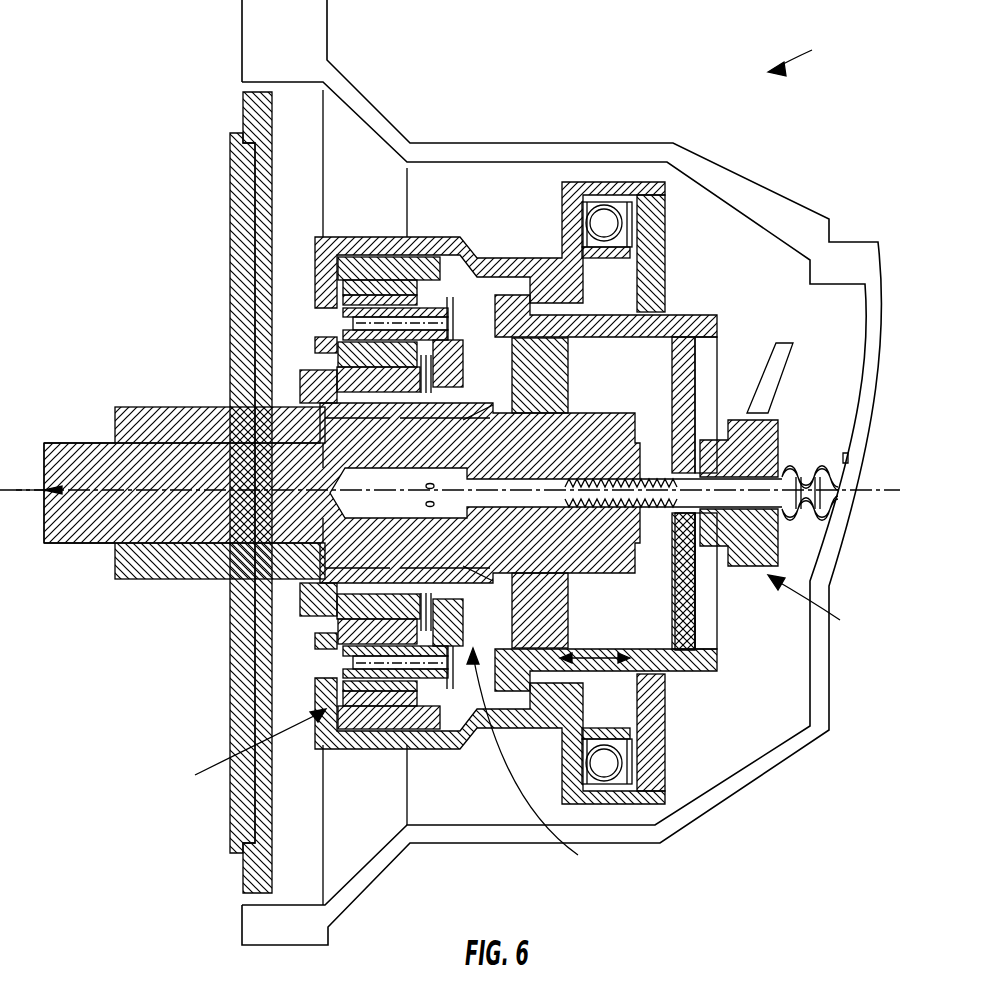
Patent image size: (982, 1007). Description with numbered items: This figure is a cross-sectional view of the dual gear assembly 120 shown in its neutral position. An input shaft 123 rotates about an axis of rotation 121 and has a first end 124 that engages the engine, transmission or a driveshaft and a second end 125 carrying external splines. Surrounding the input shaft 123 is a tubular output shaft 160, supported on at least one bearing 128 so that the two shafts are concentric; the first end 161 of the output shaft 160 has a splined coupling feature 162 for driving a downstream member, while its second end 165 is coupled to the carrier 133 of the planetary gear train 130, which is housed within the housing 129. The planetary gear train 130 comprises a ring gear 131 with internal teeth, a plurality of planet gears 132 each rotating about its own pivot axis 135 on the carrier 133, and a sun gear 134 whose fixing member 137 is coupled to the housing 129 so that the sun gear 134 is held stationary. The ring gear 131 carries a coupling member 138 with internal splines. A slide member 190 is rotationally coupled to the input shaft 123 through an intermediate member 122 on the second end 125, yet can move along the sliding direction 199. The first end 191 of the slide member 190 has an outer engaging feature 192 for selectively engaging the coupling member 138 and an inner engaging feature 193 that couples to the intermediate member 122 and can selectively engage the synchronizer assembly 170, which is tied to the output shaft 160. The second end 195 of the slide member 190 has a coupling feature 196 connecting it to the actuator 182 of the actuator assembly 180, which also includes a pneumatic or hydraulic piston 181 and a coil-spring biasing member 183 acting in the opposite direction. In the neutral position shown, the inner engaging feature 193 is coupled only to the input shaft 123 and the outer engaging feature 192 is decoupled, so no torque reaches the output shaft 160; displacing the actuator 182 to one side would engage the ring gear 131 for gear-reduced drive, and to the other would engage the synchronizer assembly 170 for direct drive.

The dual gear assembly 120 is at (809, 53).
The axis of rotation 121 is at (16, 488).
The intermediate member 122 is at (520, 634).
The input shaft 123 is at (211, 484).
The first end 124 is at (61, 484).
The second end 125 is at (536, 451).
The bearing 128 is at (327, 566).
The housing 129 is at (266, 56).
The planetary gear train 130 is at (238, 752).
The ring gear 131 is at (400, 262).
The planet gears 132 is at (330, 290).
The carrier 133 is at (330, 278).
The sun gear 134 is at (353, 382).
The pivot axis 135 is at (330, 688).
The fixing member 137 is at (242, 127).
The coupling member 138 is at (555, 235).
The output shaft 160 is at (352, 392).
The first end 161 is at (145, 407).
The coupling feature 162 is at (160, 575).
The second end 165 is at (340, 580).
The synchronizer assembly 170 is at (535, 641).
The actuator assembly 180 is at (821, 546).
The piston 181 is at (770, 548).
The actuator 182 is at (690, 573).
The biasing member 183 is at (770, 440).
The slide member 190 is at (630, 320).
The first end 191 is at (570, 325).
The outer engaging feature 192 is at (513, 295).
The inner engaging feature 193 is at (590, 700).
The second end 195 is at (688, 330).
The coupling feature 196 is at (690, 700).
The sliding direction 199 is at (650, 690).